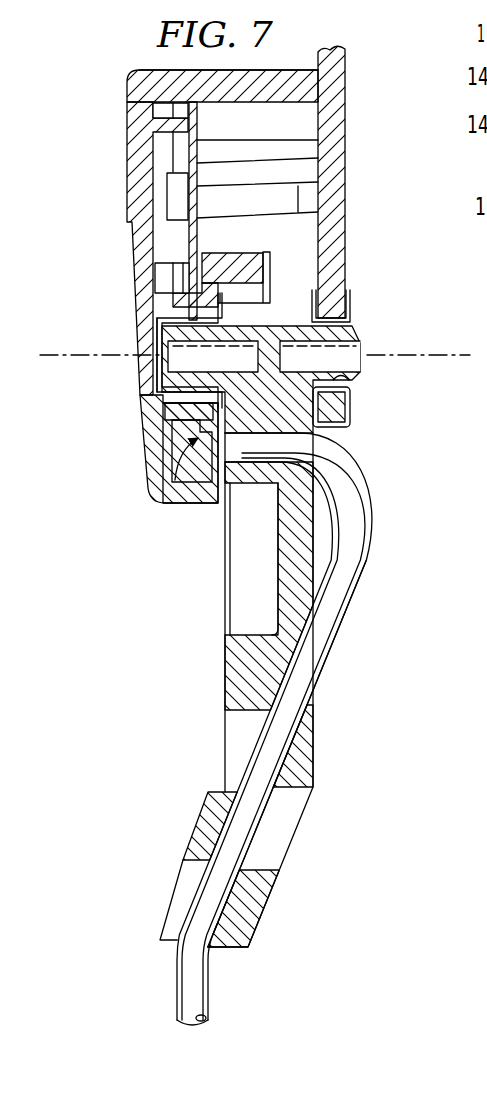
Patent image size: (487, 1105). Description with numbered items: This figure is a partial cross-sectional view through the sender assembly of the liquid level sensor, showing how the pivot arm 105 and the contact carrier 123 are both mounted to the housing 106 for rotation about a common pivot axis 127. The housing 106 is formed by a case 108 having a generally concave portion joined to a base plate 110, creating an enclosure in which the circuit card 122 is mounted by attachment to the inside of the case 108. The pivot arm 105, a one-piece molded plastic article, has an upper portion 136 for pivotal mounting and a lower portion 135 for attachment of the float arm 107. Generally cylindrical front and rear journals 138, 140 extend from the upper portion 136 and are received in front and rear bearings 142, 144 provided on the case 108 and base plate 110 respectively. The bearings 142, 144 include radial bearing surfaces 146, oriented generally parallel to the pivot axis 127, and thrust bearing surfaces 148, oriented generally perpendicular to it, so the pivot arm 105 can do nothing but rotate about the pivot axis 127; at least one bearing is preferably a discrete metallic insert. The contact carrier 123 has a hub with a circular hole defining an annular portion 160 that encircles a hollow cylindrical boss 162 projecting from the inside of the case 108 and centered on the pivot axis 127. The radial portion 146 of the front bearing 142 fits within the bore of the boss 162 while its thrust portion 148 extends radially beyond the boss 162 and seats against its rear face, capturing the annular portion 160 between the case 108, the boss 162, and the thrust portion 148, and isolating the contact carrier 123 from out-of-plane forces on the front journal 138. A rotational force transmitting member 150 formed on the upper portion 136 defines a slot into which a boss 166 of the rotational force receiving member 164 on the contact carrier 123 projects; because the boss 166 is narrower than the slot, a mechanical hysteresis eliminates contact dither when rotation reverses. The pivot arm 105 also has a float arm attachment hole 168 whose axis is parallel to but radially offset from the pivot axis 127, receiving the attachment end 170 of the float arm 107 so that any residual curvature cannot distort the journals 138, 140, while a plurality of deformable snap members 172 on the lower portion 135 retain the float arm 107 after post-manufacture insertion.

The pivot arm 105 is at (225, 676).
The housing 106 is at (97, 200).
The float arm 107 is at (351, 595).
The case 108 is at (127, 120).
The base plate 110 is at (347, 89).
The circuit card 122 is at (199, 131).
The contact carrier 123 is at (173, 466).
The pivot axis 127 is at (448, 353).
The lower portion 135 is at (316, 814).
The upper portion 136 is at (416, 377).
The front journal 138 is at (175, 388).
The rear journal 140 is at (356, 328).
The front bearing 142 is at (212, 487).
The rear bearing 144 is at (353, 290).
The radial bearing surfaces 146 is at (157, 321).
The thrust bearing surfaces 148 is at (155, 277).
The rotational force transmitting member 150 is at (273, 229).
The annular portion 160 is at (174, 445).
The hollow cylindrical boss 162 is at (168, 406).
The rotational force receiving member 164 is at (215, 243).
The boss 166 is at (282, 257).
The float arm attachment hole 168 is at (345, 478).
The attachment end 170 is at (258, 452).
The snap members 172 is at (313, 748).